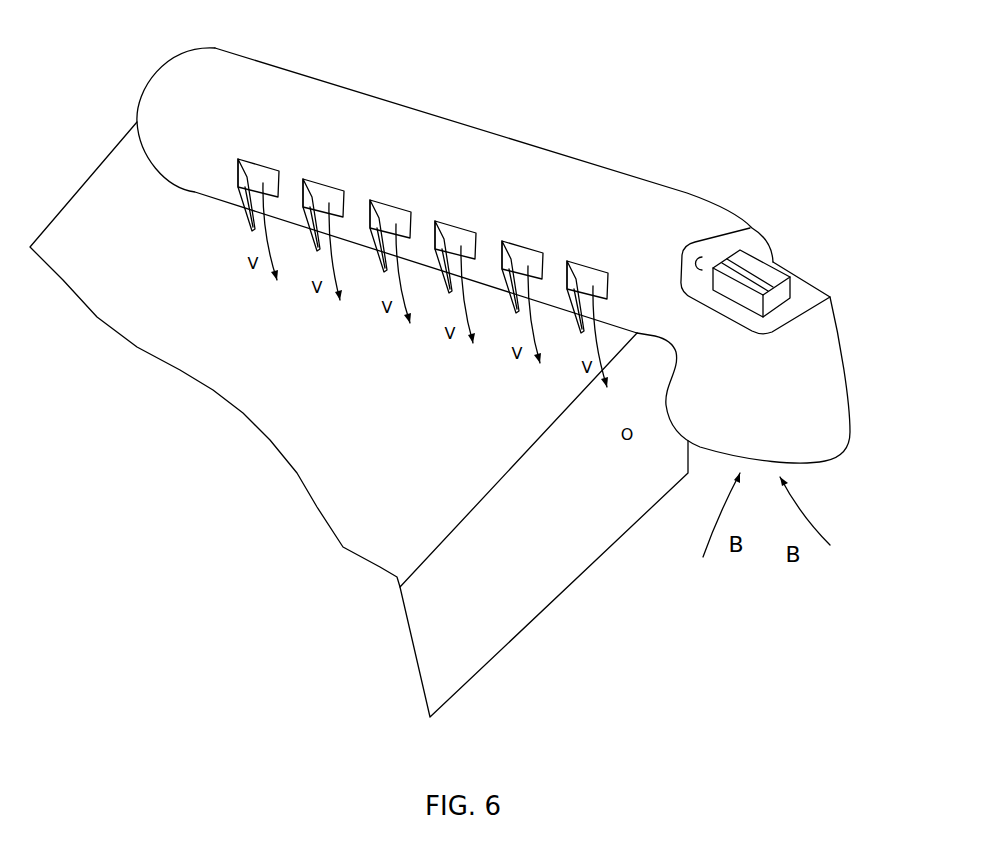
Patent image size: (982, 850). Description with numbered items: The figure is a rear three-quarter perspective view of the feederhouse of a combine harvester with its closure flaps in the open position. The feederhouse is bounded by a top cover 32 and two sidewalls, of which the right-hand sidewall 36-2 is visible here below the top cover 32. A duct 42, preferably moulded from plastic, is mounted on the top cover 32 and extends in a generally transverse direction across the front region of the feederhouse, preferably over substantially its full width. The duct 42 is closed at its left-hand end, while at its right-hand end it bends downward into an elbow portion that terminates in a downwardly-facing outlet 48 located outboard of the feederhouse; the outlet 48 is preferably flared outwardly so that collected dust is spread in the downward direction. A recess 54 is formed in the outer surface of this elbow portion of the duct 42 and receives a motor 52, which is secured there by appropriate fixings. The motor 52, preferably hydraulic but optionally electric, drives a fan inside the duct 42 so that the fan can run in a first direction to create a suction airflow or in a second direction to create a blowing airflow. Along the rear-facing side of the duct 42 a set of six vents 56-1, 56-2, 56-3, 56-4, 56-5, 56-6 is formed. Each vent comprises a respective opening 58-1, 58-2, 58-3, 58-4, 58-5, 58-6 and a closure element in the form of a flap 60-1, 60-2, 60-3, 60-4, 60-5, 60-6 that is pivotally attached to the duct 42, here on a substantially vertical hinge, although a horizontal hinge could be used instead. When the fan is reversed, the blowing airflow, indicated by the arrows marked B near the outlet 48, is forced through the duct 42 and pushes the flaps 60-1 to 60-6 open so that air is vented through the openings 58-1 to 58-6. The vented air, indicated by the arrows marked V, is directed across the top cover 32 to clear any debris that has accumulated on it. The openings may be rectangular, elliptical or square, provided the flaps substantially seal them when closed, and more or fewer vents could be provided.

The top cover 32 is at (290, 428).
The sidewall 36-2 is at (477, 620).
The duct 42 is at (690, 193).
The outlet 48 is at (823, 461).
The motor 52 is at (783, 297).
The recess 54 is at (795, 258).
The vent 56-1 is at (224, 153).
The vent 56-2 is at (296, 168).
The vent 56-3 is at (373, 190).
The vent 56-4 is at (450, 217).
The vent 56-5 is at (522, 240).
The vent 56-6 is at (593, 260).
The opening 58-1 is at (262, 190).
The opening 58-2 is at (328, 210).
The opening 58-3 is at (397, 227).
The opening 58-4 is at (462, 248).
The opening 58-5 is at (528, 268).
The opening 58-6 is at (593, 290).
The flap 60-1 is at (240, 188).
The flap 60-2 is at (305, 230).
The flap 60-3 is at (382, 252).
The flap 60-4 is at (448, 272).
The flap 60-5 is at (506, 284).
The flap 60-6 is at (578, 325).